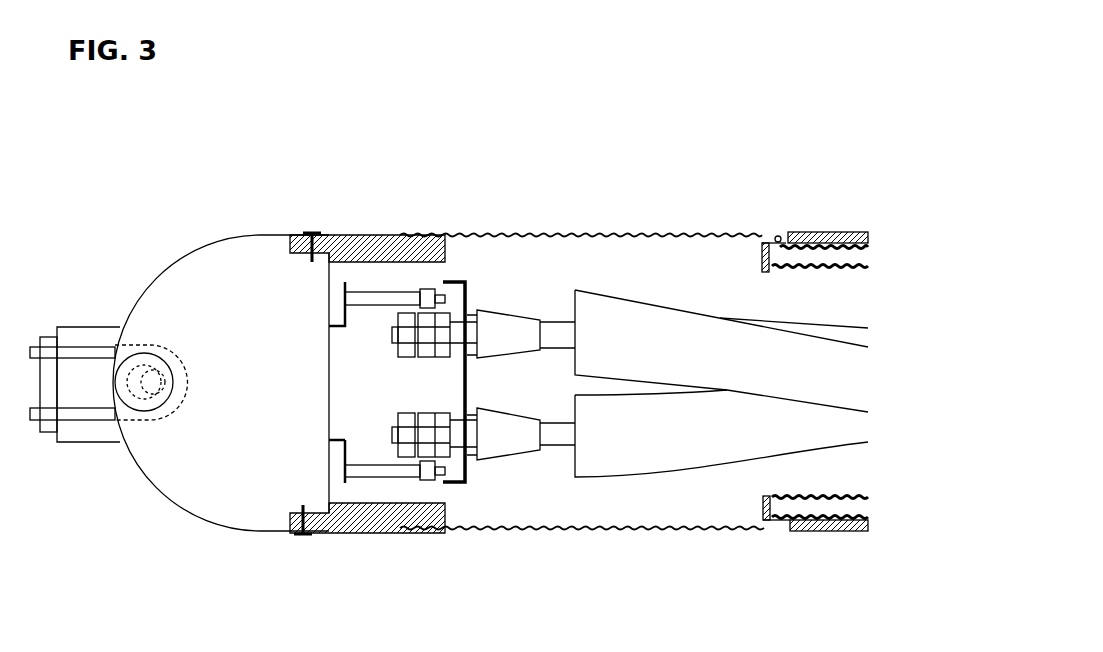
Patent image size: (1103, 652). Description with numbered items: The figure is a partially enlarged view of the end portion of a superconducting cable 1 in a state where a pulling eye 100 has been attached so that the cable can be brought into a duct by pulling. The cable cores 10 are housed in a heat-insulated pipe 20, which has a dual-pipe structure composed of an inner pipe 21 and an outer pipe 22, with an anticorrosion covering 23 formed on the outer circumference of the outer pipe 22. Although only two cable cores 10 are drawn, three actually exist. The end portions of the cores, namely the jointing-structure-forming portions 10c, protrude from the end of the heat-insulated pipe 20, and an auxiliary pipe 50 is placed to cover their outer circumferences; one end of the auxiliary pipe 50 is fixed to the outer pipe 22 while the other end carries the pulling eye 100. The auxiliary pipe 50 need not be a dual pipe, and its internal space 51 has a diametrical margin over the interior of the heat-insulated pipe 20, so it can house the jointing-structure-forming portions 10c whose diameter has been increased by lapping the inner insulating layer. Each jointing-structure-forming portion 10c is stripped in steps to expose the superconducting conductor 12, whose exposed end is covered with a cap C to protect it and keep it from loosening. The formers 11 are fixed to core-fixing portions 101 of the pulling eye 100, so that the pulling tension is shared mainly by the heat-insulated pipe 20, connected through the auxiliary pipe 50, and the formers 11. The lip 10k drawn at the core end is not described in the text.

The pulling eye 100 is at (222, 236).
The auxiliary pipe 50 is at (520, 235).
The internal space 51 is at (552, 495).
The core-fixing portion 101 is at (392, 470).
The former 11 is at (458, 324).
The cap C is at (513, 311).
The superconducting conductor 12 is at (554, 320).
The superconducting-cable core 10 is at (721, 303).
The jointing-structure-forming portion 10c is at (678, 318).
The nozzle tip 10k is at (843, 362).
The superconducting cable 1 is at (800, 383).
The heat-insulated pipe 20 is at (800, 434).
The inner pipe 21 is at (845, 533).
The outer pipe 22 is at (815, 535).
The anticorrosion covering 23 is at (800, 531).